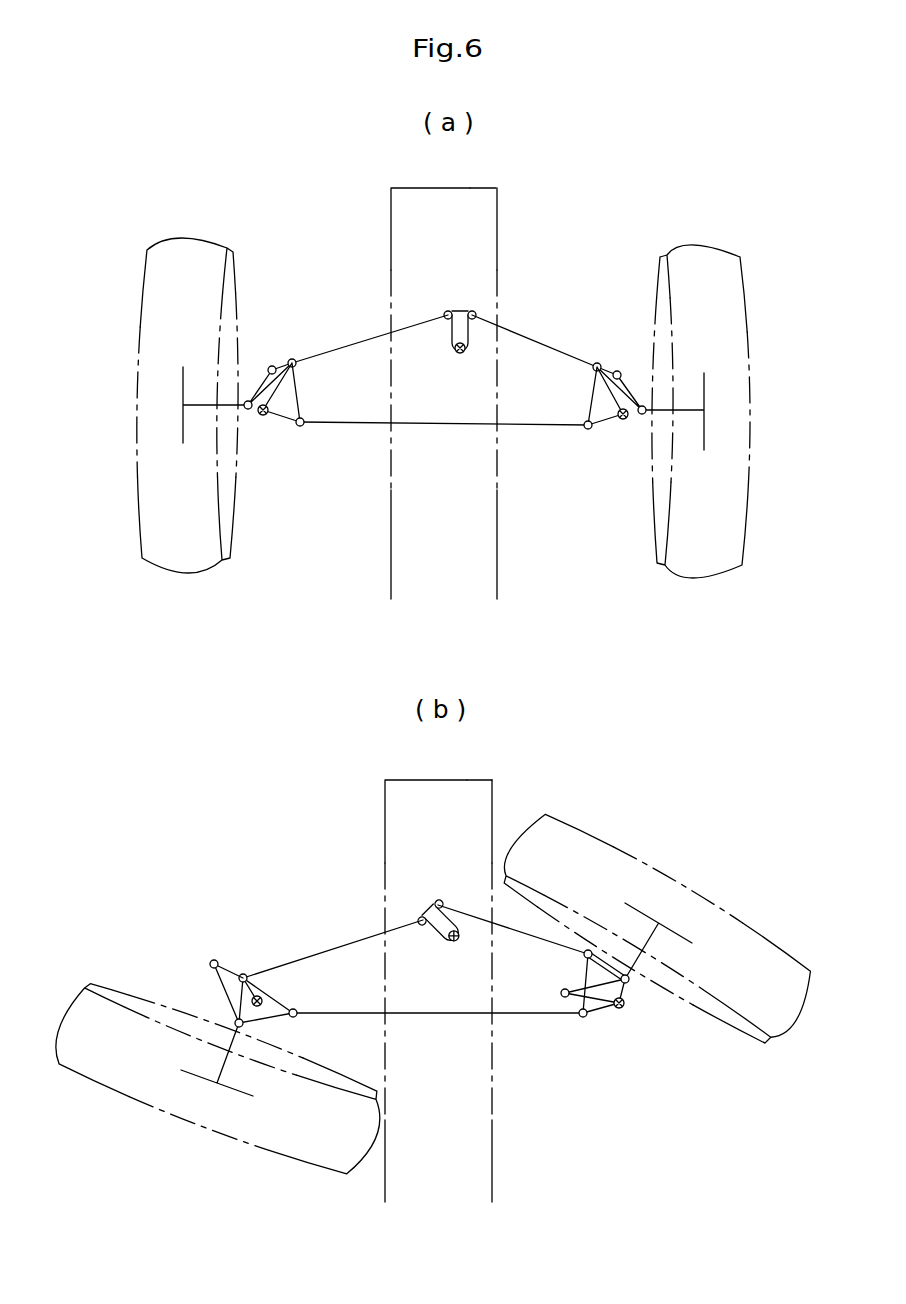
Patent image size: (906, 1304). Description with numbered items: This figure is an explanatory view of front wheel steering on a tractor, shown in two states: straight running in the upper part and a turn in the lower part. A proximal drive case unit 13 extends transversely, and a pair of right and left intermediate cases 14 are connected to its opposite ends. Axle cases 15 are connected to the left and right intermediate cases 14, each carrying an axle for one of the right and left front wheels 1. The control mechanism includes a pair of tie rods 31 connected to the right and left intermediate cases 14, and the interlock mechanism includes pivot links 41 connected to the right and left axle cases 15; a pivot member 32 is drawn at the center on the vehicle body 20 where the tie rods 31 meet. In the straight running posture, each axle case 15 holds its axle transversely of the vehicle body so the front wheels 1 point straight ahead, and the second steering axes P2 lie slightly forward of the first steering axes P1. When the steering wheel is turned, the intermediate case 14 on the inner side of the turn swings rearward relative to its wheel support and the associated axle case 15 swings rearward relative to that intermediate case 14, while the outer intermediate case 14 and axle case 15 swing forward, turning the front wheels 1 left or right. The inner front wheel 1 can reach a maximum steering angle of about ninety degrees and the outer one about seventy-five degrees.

The front wheel 1 is at (176, 248).
The proximal drive case unit 13 is at (447, 428).
The intermediate case 14 is at (262, 384).
The axle case 15 is at (205, 412).
The vehicle body 20 is at (390, 245).
The tie rod 31 is at (378, 335).
The pivot member 32 is at (461, 310).
The pivot link 41 is at (284, 397).
The first steering axis P1 is at (302, 432).
The second steering axis P2 is at (250, 417).